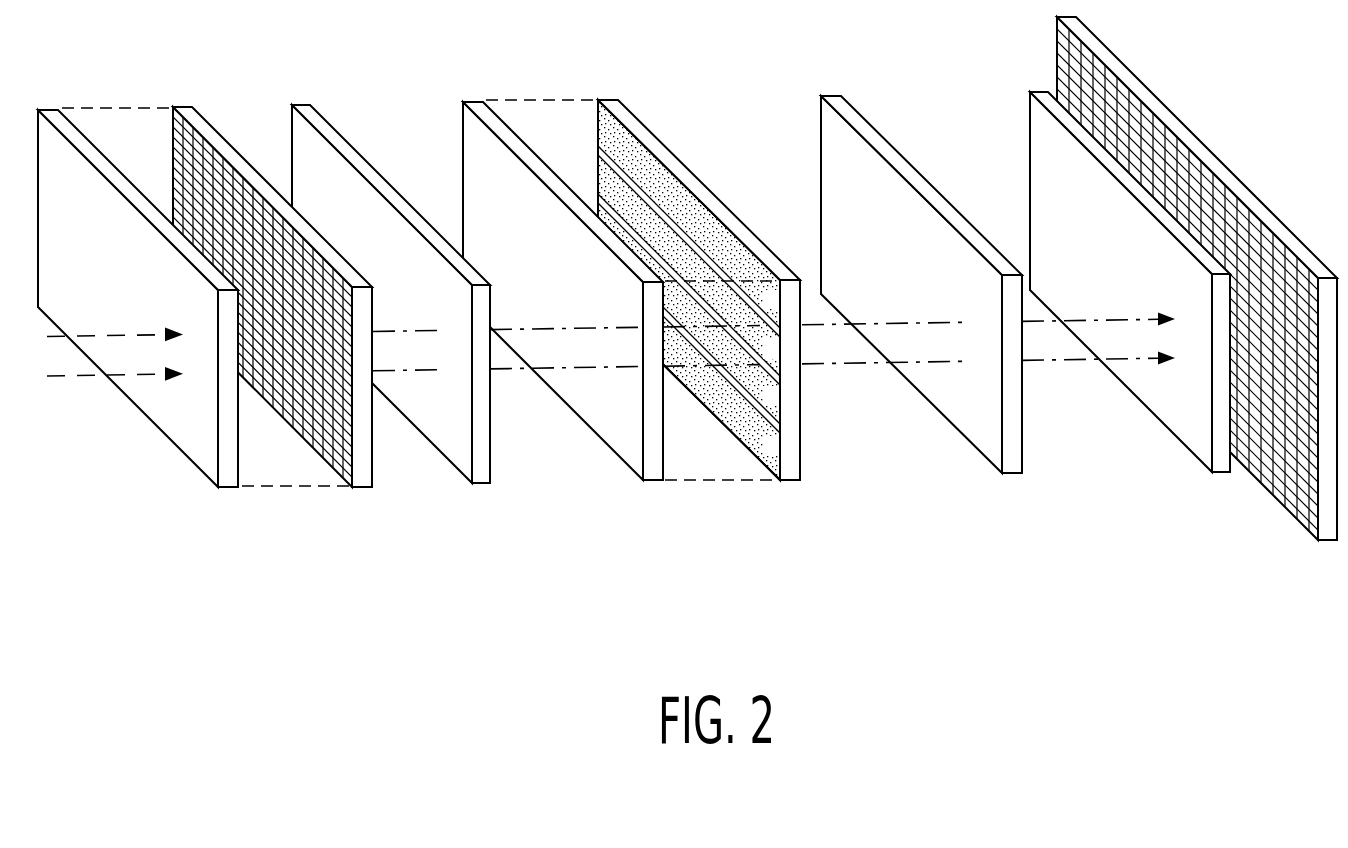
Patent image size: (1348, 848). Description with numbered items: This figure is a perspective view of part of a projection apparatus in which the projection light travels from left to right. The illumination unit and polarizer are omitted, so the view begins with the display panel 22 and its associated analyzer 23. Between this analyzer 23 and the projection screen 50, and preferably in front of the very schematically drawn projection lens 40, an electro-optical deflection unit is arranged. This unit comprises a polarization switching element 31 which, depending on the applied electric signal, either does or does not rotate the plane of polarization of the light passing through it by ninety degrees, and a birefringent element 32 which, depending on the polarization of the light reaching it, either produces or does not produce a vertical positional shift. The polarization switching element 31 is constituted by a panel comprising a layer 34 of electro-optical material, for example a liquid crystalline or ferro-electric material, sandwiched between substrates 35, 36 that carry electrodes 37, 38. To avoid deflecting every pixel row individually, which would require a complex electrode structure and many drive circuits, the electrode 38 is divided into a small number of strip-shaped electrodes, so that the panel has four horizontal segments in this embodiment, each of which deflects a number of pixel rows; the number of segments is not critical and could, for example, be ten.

The display panel 22 is at (282, 468).
The analyzer 23 is at (482, 470).
The polarization switching element 31 is at (660, 337).
The birefringent element 32 is at (1013, 467).
The layer of electro-optical material 34 is at (728, 325).
The substrate 35 is at (650, 425).
The substrate 36 is at (802, 397).
The electrode 37 is at (663, 453).
The electrode 38 is at (783, 463).
The projection lens 40 is at (1222, 462).
The projection screen 50 is at (1330, 532).